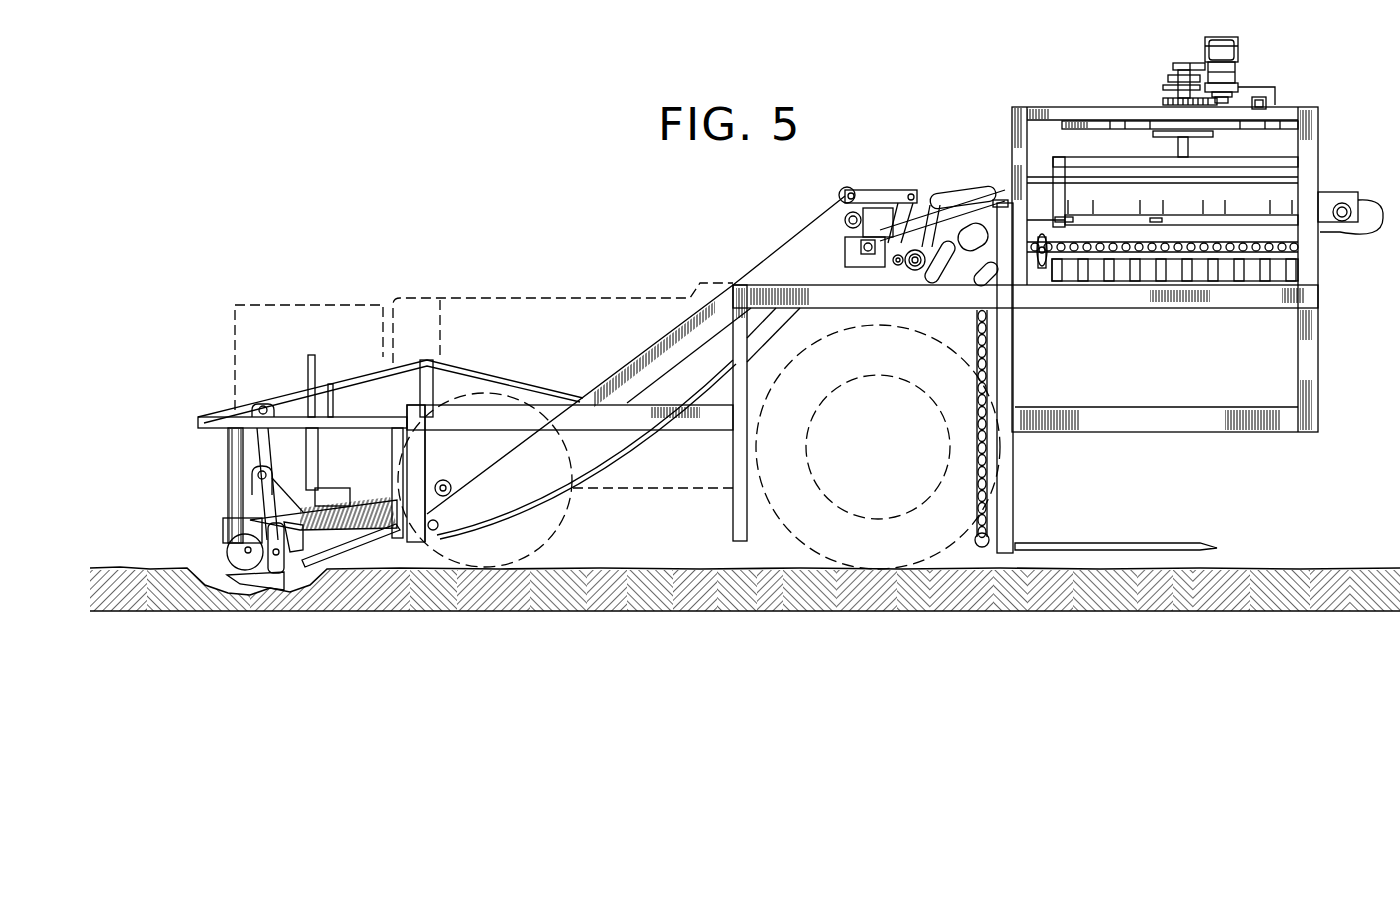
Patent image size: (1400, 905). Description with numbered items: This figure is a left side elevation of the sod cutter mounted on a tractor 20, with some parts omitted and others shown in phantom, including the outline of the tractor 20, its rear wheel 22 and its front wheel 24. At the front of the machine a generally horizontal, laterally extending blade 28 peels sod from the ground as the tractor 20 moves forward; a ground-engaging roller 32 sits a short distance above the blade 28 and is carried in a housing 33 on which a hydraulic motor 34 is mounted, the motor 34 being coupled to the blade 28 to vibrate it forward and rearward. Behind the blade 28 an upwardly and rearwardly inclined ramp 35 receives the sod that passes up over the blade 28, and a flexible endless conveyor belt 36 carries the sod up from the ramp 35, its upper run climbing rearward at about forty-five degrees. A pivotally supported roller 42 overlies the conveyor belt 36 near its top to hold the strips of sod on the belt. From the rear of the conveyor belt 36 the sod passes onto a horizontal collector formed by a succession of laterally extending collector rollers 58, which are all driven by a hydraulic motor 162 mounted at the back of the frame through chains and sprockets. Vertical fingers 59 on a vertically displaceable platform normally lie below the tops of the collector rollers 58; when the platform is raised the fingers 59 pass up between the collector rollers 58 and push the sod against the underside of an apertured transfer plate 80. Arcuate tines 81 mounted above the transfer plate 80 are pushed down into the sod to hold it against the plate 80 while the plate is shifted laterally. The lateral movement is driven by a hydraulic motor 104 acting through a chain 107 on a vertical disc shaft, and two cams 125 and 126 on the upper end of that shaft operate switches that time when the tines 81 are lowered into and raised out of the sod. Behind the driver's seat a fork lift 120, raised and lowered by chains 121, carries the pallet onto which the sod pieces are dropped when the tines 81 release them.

The tractor 20 is at (540, 296).
The rear wheel 22 is at (777, 518).
The front wheel 24 is at (573, 503).
The blade 28 is at (240, 592).
The ground-engaging roller 32 is at (235, 560).
The housing 33 is at (377, 508).
The hydraulic motor 34 is at (334, 488).
The ramp 35 is at (360, 532).
The conveyor belt 36 is at (610, 455).
The pivotally supported roller 42 is at (838, 194).
The collector roller 58 is at (1128, 244).
The vertical finger 59 is at (1100, 266).
The transfer plate 80 is at (1118, 222).
The tine 81 is at (1072, 206).
The hydraulic motor 104 is at (1238, 53).
The chain 107 is at (1163, 100).
The fork lift 120 is at (1068, 545).
The chain 121 is at (977, 355).
The cam 125 is at (1170, 84).
The cam 126 is at (1175, 66).
The hydraulic motor 162 is at (1328, 196).